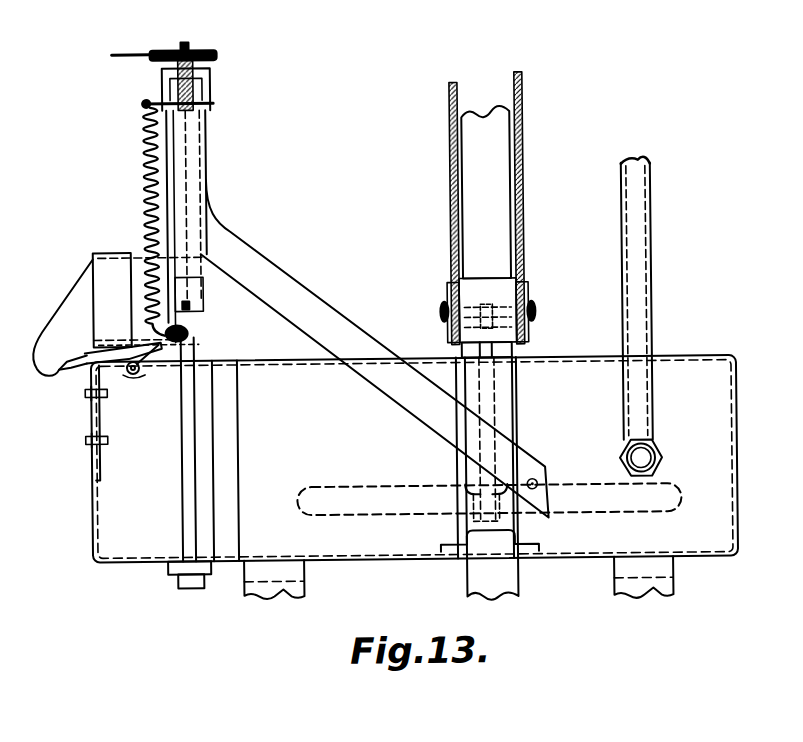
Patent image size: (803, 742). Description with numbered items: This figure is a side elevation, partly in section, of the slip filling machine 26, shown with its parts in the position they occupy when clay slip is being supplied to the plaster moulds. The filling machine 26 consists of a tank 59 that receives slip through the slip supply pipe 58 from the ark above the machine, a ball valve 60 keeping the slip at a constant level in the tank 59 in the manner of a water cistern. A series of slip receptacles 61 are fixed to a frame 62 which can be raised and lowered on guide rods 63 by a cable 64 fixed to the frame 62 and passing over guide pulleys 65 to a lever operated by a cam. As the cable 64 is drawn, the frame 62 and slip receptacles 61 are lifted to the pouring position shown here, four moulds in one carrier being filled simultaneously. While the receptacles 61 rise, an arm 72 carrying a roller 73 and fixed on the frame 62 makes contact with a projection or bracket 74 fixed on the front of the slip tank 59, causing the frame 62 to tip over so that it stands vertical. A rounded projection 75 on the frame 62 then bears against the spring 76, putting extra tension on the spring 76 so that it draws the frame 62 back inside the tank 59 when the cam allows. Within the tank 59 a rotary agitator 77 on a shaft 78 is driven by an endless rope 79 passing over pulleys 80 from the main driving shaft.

The filling machine 26 is at (374, 349).
The slip supply pipe 58 is at (645, 269).
The tank 59 is at (415, 479).
The ball valve 60 is at (648, 460).
The slip receptacles 61 is at (118, 314).
The frame 62 is at (214, 99).
The guide rods 63 is at (188, 427).
The cable 64 is at (163, 46).
The guide pulleys 65 is at (204, 40).
The arm 72 is at (149, 368).
The roller 73 is at (112, 423).
The projection or bracket 74 is at (127, 364).
The rounded projection 75 is at (190, 328).
The spring 76 is at (152, 183).
The rotary agitator 77 is at (381, 495).
The shaft 78 is at (492, 403).
The endless rope 79 is at (518, 94).
The pulleys 80 is at (512, 330).